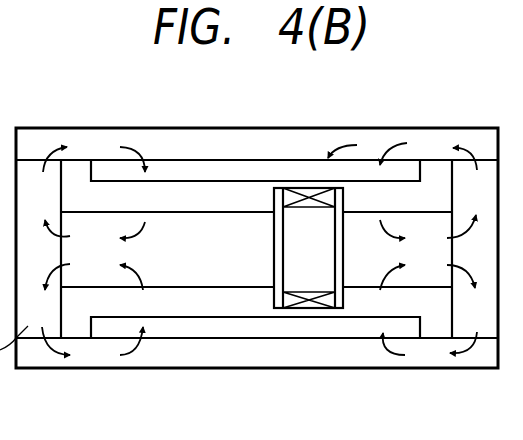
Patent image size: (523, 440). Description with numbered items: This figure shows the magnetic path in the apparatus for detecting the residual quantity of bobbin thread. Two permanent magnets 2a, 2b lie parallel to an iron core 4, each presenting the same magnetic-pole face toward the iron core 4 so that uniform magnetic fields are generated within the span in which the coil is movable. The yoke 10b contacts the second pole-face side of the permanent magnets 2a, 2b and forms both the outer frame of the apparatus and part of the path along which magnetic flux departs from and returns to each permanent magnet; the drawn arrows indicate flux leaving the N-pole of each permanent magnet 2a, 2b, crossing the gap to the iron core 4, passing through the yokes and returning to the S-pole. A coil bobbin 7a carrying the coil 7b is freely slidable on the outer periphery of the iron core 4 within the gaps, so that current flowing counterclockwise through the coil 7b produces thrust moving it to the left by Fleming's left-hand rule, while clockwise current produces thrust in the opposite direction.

The yoke 10b is at (35, 137).
The permanent magnet 2a is at (101, 170).
The permanent magnet 2b is at (215, 332).
The iron core 4 is at (235, 222).
The coil bobbin 7a is at (278, 309).
The coil 7b is at (313, 309).